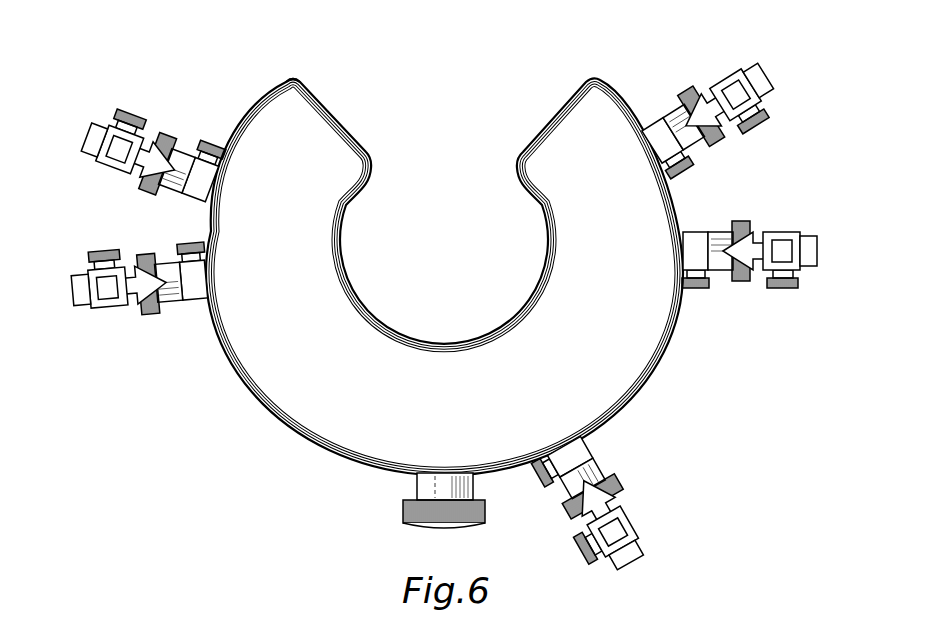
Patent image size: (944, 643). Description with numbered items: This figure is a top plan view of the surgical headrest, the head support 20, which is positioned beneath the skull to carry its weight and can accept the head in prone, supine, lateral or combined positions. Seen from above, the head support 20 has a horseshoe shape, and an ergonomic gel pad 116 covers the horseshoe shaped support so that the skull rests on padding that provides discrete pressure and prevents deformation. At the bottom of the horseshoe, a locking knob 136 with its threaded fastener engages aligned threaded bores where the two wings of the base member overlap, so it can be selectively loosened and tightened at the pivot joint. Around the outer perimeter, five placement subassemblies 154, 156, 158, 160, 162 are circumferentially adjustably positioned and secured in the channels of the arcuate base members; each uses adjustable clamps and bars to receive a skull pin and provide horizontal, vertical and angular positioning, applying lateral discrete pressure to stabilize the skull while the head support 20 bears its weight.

The head support 20 is at (418, 102).
The ergonomic gel pad 116 is at (294, 77).
The locking knob 136 is at (413, 524).
The placement subassembly 154 is at (736, 68).
The placement subassembly 156 is at (788, 231).
The placement subassembly 158 is at (650, 552).
The placement subassembly 160 is at (81, 318).
The placement subassembly 162 is at (99, 119).